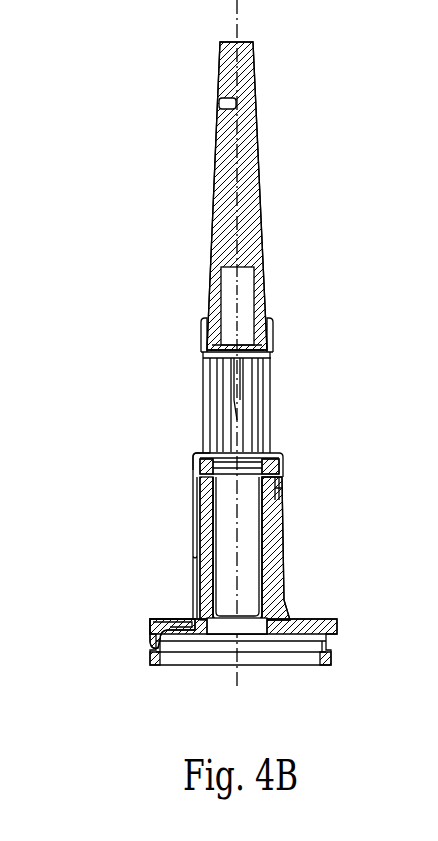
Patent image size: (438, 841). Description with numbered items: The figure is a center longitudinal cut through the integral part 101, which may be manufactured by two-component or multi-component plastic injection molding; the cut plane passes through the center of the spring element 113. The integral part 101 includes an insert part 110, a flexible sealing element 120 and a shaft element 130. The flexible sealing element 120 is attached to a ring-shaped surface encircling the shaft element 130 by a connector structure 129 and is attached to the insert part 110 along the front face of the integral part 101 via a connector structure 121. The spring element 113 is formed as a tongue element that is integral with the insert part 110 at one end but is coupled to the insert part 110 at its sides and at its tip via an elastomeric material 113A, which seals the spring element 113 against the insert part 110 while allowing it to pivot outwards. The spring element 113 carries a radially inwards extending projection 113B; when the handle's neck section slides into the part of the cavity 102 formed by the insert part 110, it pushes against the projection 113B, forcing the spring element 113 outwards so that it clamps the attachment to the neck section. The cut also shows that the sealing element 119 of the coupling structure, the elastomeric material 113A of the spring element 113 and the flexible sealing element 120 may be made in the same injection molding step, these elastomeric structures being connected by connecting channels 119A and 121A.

The integral part 101 is at (95, 135).
The cavity 102 is at (243, 672).
The insert part 110 is at (231, 499).
The spring element 113 is at (198, 520).
The elastomeric material 113A is at (193, 485).
The projection 113B is at (282, 494).
The sealing element 119 is at (335, 637).
The connecting channel 119A is at (180, 620).
The flexible sealing element 120 is at (312, 392).
The connector structure 121 is at (280, 450).
The connecting channel 121A is at (193, 458).
The connector structure 129 is at (272, 328).
The shaft element 130 is at (305, 187).